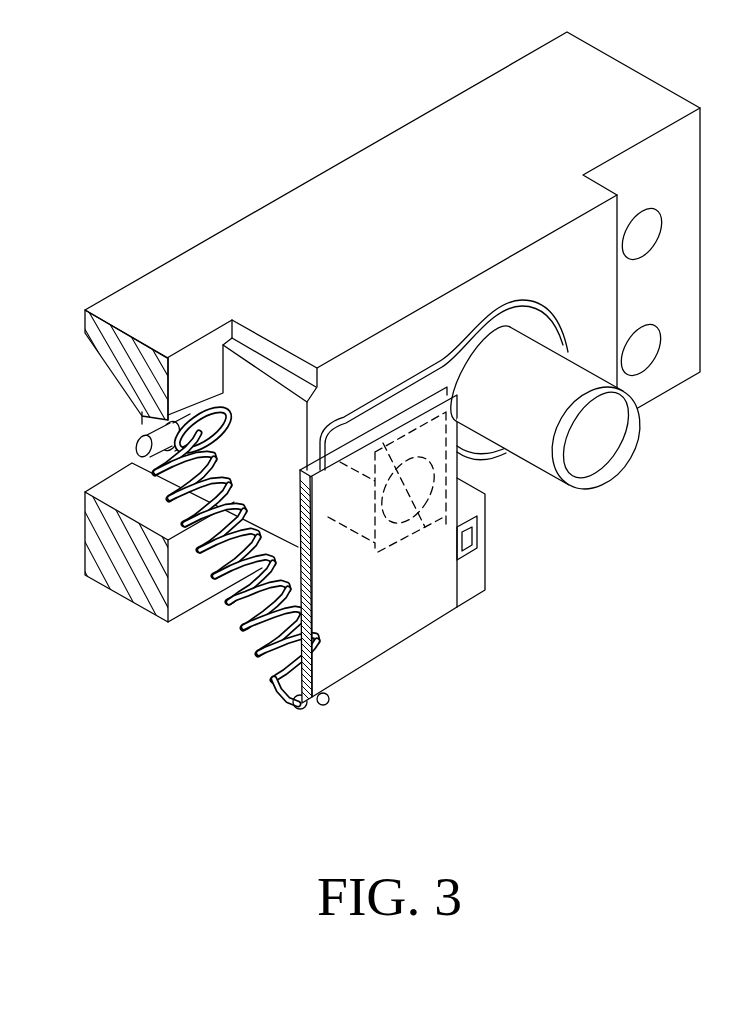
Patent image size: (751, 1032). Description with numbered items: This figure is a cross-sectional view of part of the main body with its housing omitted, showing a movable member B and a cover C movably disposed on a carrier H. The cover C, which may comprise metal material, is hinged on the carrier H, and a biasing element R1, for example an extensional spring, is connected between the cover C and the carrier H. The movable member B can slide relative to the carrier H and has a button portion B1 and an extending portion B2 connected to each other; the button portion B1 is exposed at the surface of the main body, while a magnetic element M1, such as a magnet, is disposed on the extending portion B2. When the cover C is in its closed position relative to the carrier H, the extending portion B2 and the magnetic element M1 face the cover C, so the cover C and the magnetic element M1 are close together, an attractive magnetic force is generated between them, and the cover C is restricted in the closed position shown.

The carrier H is at (288, 174).
The biasing element R1 is at (242, 610).
The cover C is at (358, 652).
The magnetic element M1 is at (446, 525).
The movable member B is at (589, 428).
The button portion B1 is at (607, 447).
The extending portion B2 is at (482, 470).